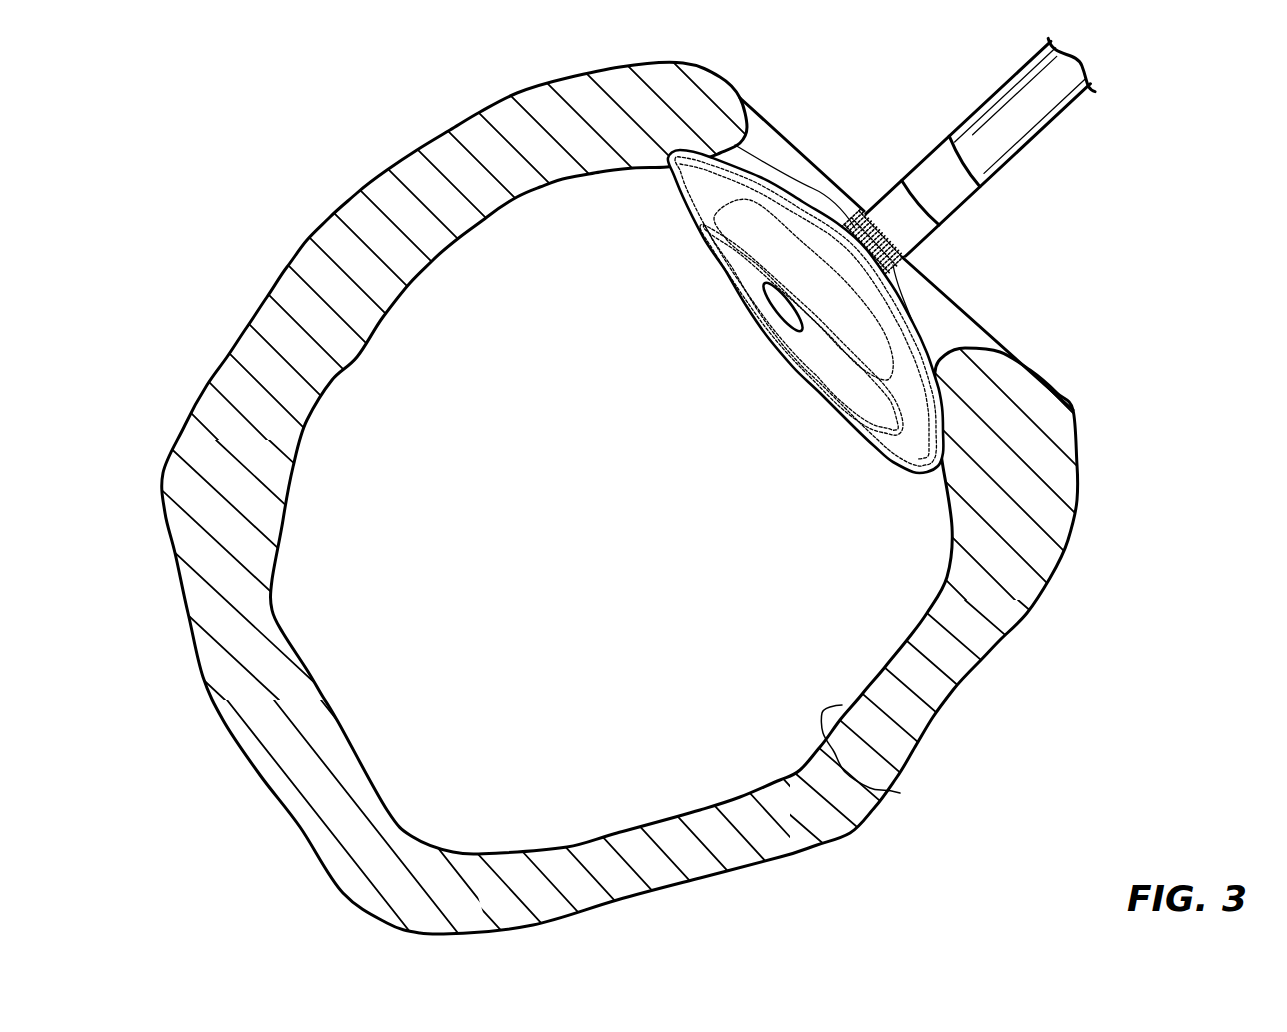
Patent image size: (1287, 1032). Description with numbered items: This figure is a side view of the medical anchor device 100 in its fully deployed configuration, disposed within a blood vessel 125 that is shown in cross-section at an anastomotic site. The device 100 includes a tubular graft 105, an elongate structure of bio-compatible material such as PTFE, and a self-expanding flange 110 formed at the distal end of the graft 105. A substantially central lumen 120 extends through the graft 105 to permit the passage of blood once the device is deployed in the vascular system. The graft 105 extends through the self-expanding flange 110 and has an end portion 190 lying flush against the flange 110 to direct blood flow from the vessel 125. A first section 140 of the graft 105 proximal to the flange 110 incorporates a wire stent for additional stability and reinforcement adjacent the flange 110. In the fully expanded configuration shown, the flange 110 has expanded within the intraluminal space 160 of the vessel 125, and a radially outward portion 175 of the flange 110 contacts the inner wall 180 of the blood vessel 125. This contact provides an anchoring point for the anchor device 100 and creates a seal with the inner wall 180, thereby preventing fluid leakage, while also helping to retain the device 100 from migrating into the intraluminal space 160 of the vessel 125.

The medical anchor device 100 is at (880, 242).
The tubular graft 105 is at (1018, 124).
The self-expanding flange 110 is at (902, 325).
The central lumen 120 is at (779, 311).
The blood vessel 125 is at (957, 668).
The first section 140 is at (907, 271).
The intraluminal space 160 is at (623, 513).
The radially outward portion 175 is at (803, 187).
The inner wall 180 is at (900, 793).
The end portion 190 is at (766, 291).